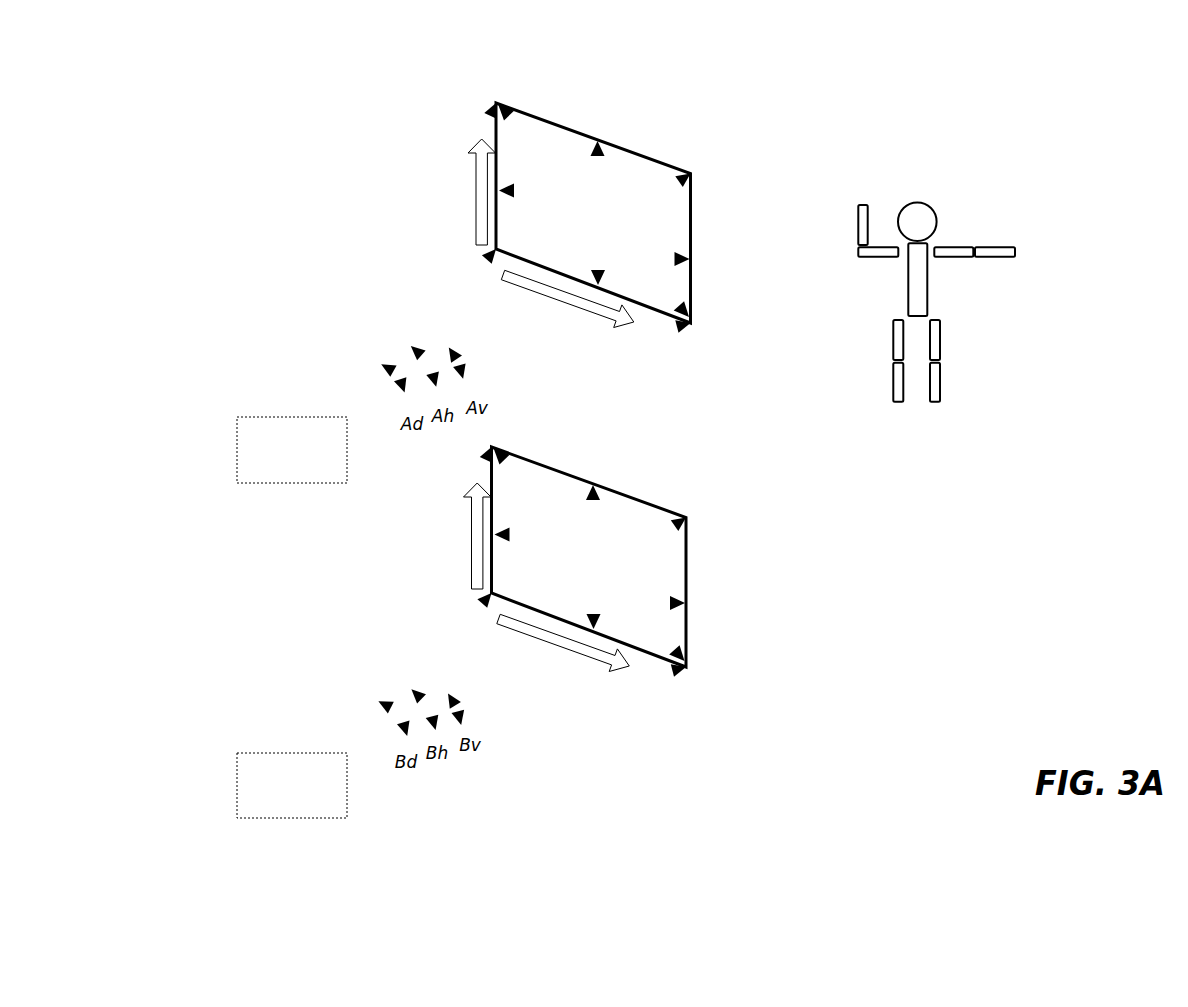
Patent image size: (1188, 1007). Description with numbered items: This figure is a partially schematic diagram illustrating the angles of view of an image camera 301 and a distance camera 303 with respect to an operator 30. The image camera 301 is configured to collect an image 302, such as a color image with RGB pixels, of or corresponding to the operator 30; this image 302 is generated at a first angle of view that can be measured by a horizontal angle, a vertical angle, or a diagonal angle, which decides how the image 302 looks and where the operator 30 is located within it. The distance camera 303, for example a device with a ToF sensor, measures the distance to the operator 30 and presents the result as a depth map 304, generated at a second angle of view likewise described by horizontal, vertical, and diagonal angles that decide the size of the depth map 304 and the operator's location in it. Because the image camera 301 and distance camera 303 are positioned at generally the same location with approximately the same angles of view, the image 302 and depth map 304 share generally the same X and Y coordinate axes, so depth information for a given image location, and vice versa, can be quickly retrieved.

The image 302 is at (660, 157).
The depth map 304 is at (645, 495).
The image camera 301 is at (292, 450).
The distance camera 303 is at (292, 785).
The operator 30 is at (936, 331).